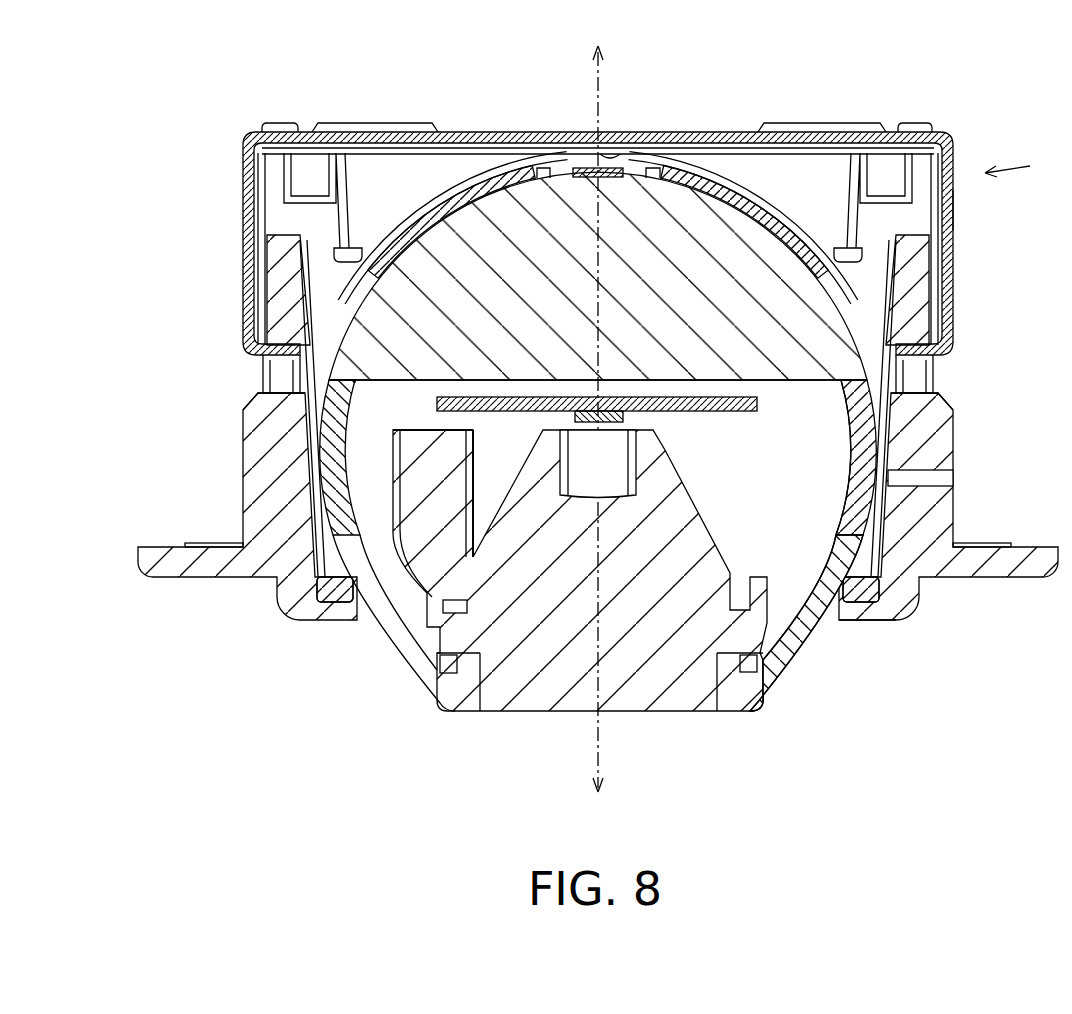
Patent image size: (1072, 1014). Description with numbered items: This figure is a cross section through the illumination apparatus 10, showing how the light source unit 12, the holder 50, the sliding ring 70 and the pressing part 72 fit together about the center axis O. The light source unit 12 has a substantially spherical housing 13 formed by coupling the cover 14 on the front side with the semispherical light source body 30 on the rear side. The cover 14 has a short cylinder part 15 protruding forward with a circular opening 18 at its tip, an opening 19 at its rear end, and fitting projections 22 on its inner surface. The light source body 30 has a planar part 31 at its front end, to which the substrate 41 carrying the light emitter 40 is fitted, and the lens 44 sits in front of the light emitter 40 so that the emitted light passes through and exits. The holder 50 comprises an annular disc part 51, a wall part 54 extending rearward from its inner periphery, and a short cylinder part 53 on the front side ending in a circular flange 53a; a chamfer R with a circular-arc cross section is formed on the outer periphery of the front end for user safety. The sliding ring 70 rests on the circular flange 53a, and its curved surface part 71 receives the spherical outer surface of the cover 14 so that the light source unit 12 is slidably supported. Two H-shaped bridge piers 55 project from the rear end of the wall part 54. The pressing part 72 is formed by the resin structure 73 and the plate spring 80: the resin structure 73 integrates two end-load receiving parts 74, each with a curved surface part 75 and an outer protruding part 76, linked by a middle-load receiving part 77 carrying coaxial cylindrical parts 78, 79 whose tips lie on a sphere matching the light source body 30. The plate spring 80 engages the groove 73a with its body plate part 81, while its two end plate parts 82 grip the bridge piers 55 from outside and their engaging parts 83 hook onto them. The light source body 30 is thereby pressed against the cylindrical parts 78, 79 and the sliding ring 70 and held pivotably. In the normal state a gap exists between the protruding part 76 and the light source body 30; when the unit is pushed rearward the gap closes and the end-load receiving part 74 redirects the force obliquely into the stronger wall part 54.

The illumination apparatus 10 is at (1033, 169).
The light source unit 12 is at (403, 667).
The housing 13 is at (383, 642).
The cover 14 is at (792, 665).
The short cylinder part 15 is at (725, 700).
The circular opening 18 is at (475, 713).
The opening 19 is at (350, 330).
The fitting projection 22 is at (427, 503).
The light source body 30 is at (712, 232).
The planar part 31 is at (882, 397).
The light emitter 40 is at (622, 418).
The substrate 41 is at (752, 412).
The lens 44 is at (700, 475).
The holder 50 is at (955, 505).
The annular disc part 51 is at (1008, 572).
The short cylinder part 53 is at (903, 598).
The circular flange 53a is at (830, 622).
The wall part 54 is at (953, 447).
The bridge pier 55 is at (290, 293).
The sliding ring 70 is at (862, 622).
The curved surface part 71 is at (848, 580).
The pressing part 72 is at (950, 150).
The resin structure 73 is at (838, 168).
The groove 73a is at (672, 150).
The end-load receiving part 74 is at (400, 165).
The curved surface part 75 is at (472, 210).
The protruding part 76 is at (390, 396).
The middle-load receiving part 77 is at (640, 140).
The cylindrical part 78 is at (553, 168).
The cylindrical part 79 is at (522, 172).
The plate spring 80 is at (953, 205).
The body plate part 81 is at (612, 150).
The end plate part 82 is at (262, 245).
The engaging part 83 is at (262, 372).
The center axis O is at (612, 735).
The chamfer R is at (748, 715).